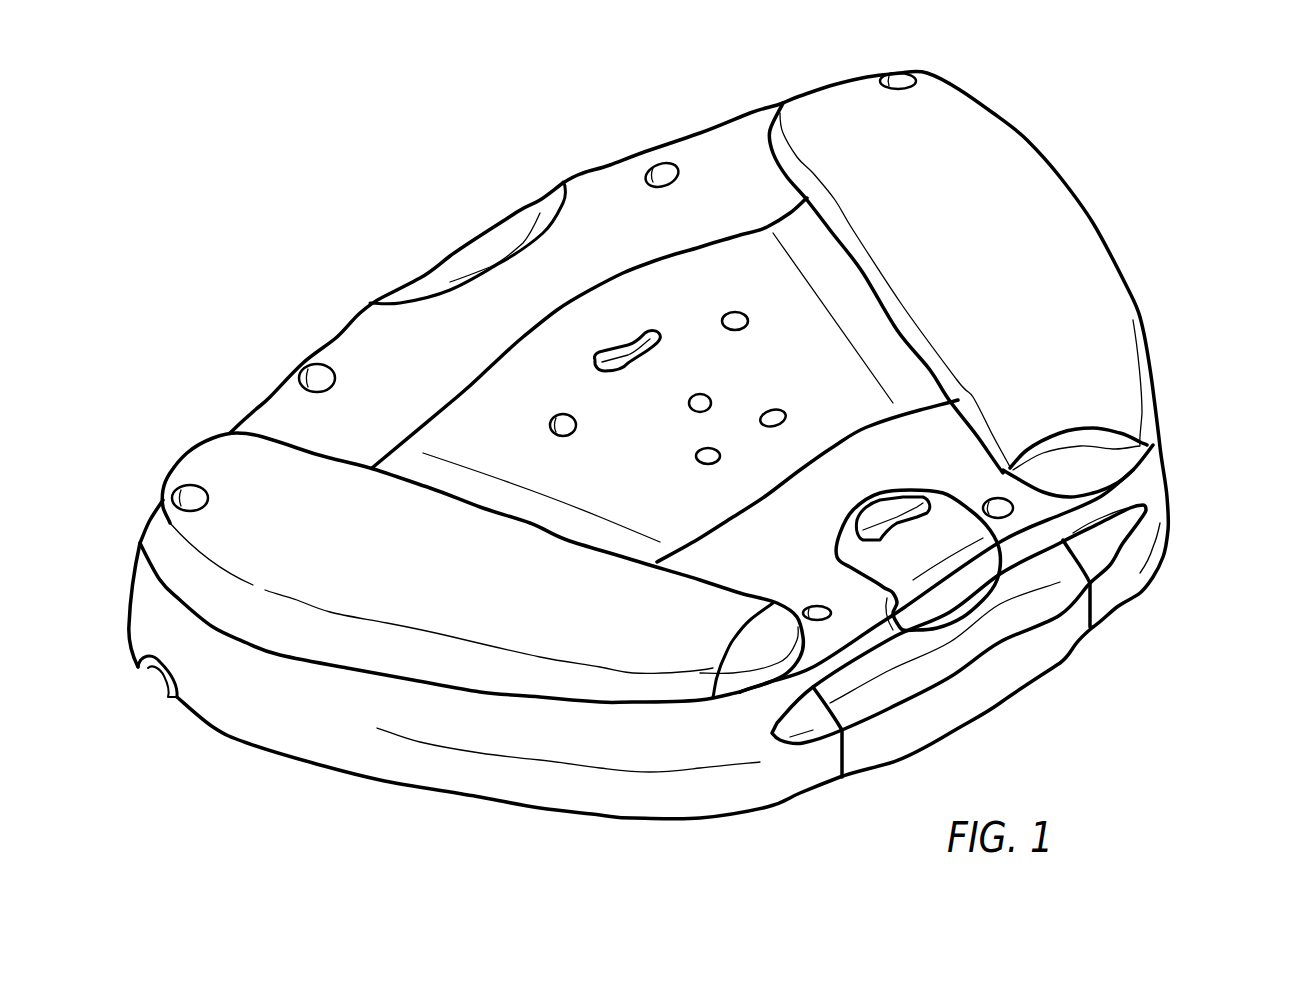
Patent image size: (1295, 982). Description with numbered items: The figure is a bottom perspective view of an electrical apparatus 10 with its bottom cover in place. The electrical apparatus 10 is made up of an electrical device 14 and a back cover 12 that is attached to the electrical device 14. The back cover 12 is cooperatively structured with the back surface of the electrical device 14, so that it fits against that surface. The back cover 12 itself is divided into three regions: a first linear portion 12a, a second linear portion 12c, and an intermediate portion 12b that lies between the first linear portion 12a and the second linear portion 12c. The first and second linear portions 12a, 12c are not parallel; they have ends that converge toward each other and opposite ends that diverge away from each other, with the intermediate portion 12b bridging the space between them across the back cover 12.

The electrical apparatus 10 is at (1146, 647).
The back cover 12 is at (449, 425).
The first linear portion 12a is at (228, 475).
The intermediate portion 12b is at (753, 277).
The second linear portion 12c is at (968, 145).
The electrical device 14 is at (1157, 512).